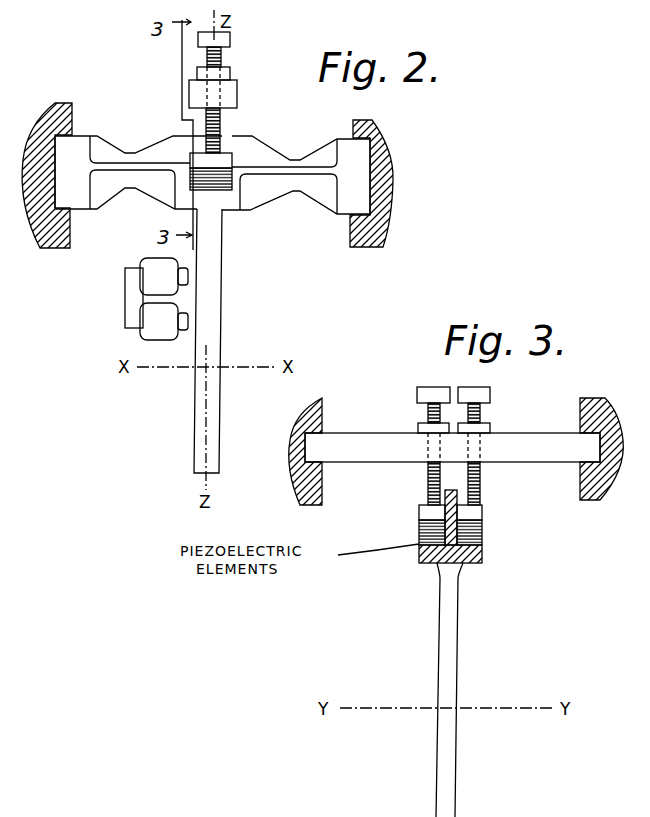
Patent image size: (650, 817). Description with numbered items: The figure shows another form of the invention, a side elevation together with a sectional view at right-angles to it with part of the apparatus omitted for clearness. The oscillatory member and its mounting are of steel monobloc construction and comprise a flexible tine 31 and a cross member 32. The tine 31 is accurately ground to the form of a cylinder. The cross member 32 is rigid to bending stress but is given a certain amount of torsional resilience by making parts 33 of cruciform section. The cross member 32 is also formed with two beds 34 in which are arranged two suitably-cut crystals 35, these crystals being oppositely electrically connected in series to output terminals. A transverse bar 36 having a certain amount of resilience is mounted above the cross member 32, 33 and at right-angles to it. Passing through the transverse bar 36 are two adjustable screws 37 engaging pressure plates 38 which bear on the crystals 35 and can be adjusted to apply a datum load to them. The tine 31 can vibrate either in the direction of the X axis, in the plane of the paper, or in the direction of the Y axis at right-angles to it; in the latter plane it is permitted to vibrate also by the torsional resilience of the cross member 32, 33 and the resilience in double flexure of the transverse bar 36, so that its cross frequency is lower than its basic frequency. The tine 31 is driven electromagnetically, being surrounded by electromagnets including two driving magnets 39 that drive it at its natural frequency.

In FIG. 2, the flexible tine 31 is at (219, 283).
In FIG. 3, the flexible tine 31 is at (438, 663).
In FIG. 2, the cross member 32 is at (68, 142).
In FIG. 3, the cross member 32 is at (438, 565).
In FIG. 2, the parts of cruciform section 33 is at (97, 150).
In FIG. 3, the beds 34 is at (419, 558).
In FIG. 2, the crystals 35 is at (225, 190).
In FIG. 3, the crystals 35 is at (419, 535).
In FIG. 2, the transverse bar 36 is at (189, 90).
In FIG. 3, the transverse bar 36 is at (305, 438).
In FIG. 2, the adjustable screws 37 is at (198, 38).
In FIG. 3, the adjustable screws 37 is at (417, 395).
In FIG. 2, the pressure plates 38 is at (190, 157).
In FIG. 3, the pressure plates 38 is at (420, 510).
In FIG. 2, the driving magnets 39 is at (125, 281).